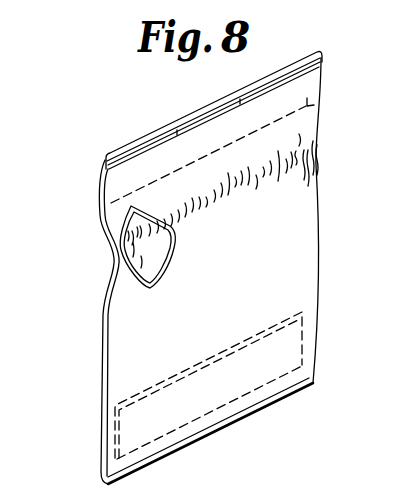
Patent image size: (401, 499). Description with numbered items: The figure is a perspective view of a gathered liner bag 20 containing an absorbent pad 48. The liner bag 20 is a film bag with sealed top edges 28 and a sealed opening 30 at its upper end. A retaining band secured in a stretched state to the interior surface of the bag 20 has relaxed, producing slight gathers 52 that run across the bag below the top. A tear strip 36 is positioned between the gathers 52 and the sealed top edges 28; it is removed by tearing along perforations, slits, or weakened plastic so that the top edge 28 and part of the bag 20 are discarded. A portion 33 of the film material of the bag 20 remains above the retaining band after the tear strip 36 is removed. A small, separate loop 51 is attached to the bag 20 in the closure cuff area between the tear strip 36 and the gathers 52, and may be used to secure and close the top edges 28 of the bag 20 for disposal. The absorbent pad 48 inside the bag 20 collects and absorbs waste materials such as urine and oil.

The liner bag 20 is at (81, 383).
The sealed top edges 28 is at (263, 83).
The sealed opening 30 is at (211, 106).
The portion of the film material 33 is at (330, 107).
The tear strip 36 is at (308, 102).
The absorbent pad 48 is at (237, 394).
The loop 51 is at (104, 293).
The gathers 52 is at (318, 158).